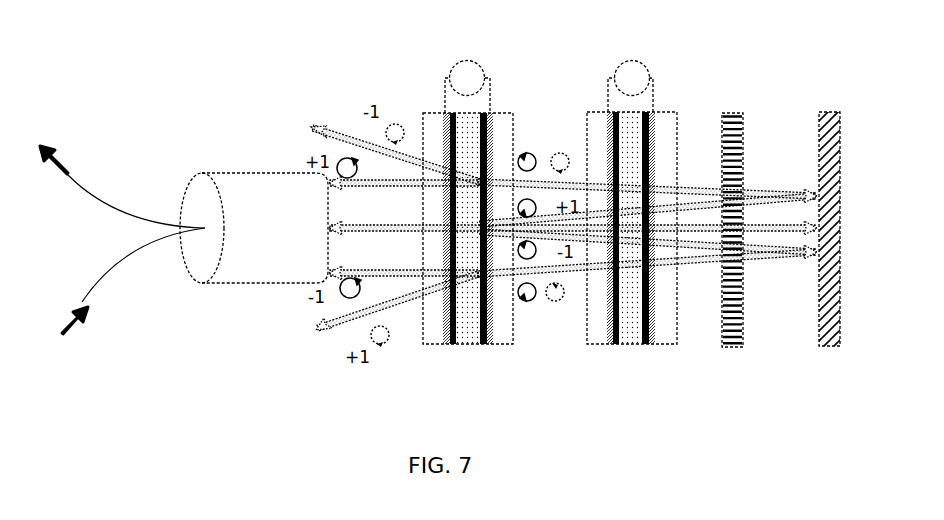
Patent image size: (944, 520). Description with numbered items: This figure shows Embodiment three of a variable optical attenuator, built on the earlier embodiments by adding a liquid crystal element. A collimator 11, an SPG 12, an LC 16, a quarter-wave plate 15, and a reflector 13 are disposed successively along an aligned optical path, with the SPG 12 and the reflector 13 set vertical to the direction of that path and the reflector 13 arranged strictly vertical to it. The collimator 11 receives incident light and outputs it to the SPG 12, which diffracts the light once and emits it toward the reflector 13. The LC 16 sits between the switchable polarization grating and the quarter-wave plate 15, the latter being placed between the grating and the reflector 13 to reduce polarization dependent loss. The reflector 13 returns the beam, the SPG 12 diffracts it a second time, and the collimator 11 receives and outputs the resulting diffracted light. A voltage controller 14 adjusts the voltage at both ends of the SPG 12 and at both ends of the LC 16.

The collimator 11 is at (235, 285).
The SPG 12 is at (466, 346).
The reflector 13 is at (822, 348).
The voltage controller 14 is at (490, 78).
The quarter-wave plate 15 is at (722, 348).
The LC 16 is at (606, 346).